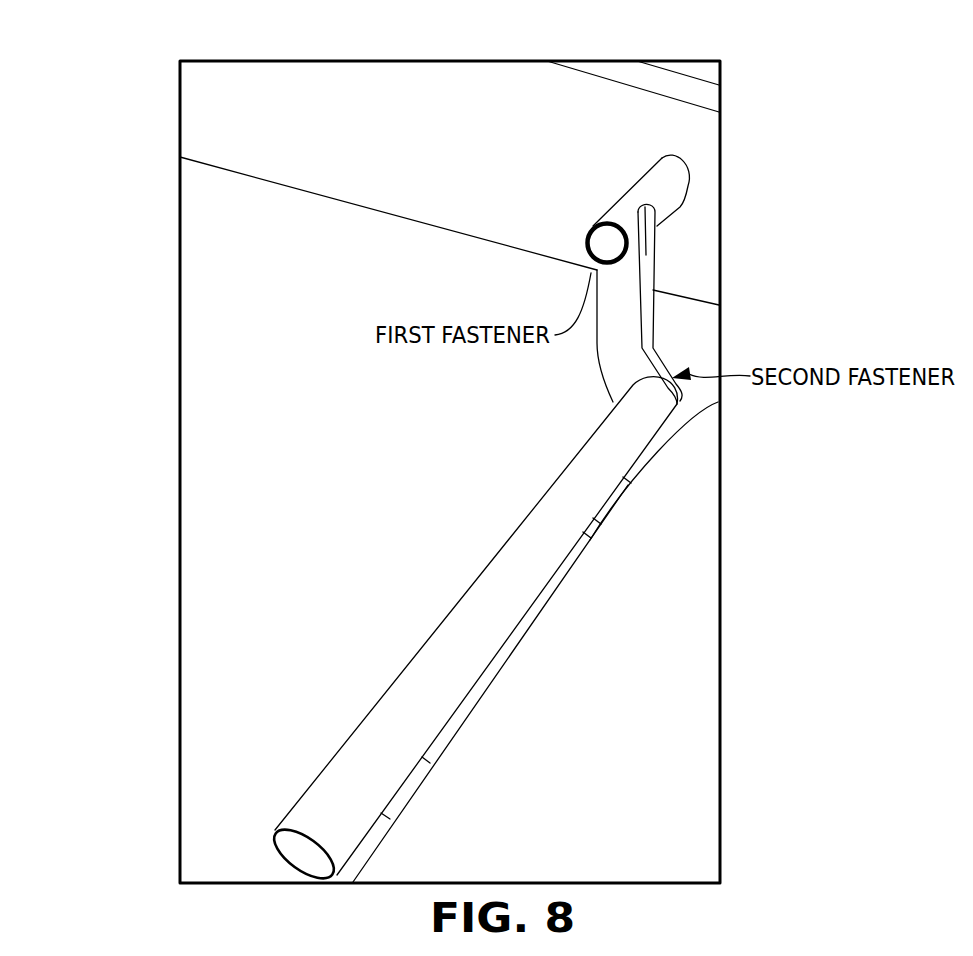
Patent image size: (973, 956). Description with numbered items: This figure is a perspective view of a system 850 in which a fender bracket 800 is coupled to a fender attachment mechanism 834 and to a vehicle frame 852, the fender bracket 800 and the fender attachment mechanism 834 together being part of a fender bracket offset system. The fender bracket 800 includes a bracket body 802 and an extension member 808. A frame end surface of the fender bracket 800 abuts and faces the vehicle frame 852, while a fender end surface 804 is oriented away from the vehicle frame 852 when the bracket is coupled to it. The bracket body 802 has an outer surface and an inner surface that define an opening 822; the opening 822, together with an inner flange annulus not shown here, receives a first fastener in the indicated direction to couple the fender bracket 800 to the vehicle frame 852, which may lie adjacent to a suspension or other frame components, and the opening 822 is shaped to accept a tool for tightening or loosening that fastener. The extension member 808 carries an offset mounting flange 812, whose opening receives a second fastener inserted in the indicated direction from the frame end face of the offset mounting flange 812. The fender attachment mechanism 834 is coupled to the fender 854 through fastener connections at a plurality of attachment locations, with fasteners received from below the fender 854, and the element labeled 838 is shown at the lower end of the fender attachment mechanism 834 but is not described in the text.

The system 850 is at (148, 82).
The vehicle frame 852 is at (472, 207).
The opening 822 is at (627, 173).
The bracket body 802 is at (657, 213).
The fender end surface 804 is at (601, 253).
The extension member 808 is at (615, 334).
The fender bracket 800 is at (672, 342).
The offset mounting flange 812 is at (680, 401).
The fender 854 is at (678, 568).
The fender attachment mechanism 834 is at (374, 717).
The rod end 838 is at (272, 843).